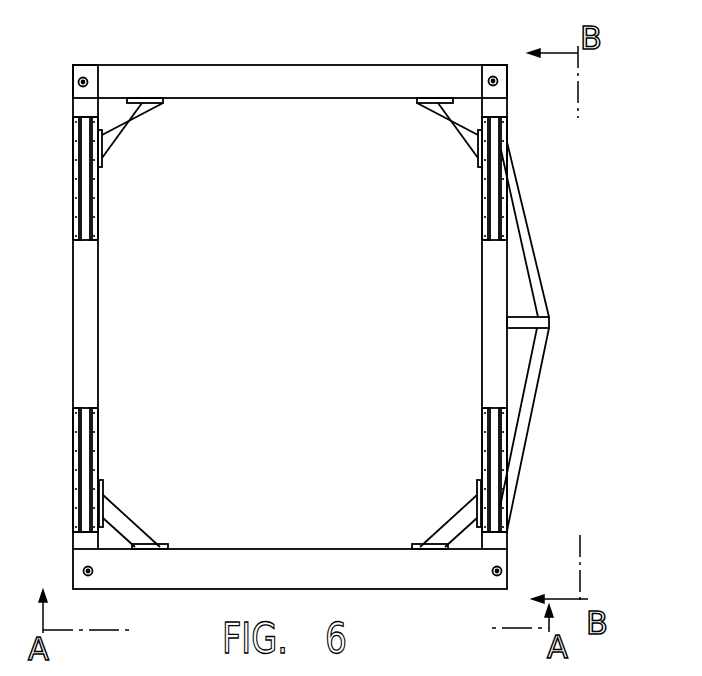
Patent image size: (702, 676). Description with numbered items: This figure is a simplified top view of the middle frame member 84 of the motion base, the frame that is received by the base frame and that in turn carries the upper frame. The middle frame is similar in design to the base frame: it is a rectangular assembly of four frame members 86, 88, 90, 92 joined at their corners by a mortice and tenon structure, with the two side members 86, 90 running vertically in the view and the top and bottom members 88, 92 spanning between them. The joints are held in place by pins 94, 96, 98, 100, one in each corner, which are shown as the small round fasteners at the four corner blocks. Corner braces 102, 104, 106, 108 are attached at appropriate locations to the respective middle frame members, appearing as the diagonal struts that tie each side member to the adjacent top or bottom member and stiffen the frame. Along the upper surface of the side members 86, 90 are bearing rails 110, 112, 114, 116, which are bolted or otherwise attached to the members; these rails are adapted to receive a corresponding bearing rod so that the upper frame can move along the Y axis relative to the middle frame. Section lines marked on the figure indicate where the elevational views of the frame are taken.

The middle frame member 84 is at (596, 155).
The middle frame member 86 is at (81, 297).
The middle frame member 88 is at (278, 72).
The middle frame member 90 is at (485, 299).
The middle frame member 92 is at (275, 556).
The pin 94 is at (83, 77).
The pin 96 is at (493, 76).
The pin 98 is at (497, 577).
The pin 100 is at (88, 577).
The corner brace 102 is at (122, 127).
The corner brace 104 is at (453, 123).
The corner brace 106 is at (458, 518).
The corner brace 108 is at (127, 522).
The bearing rail 110 is at (74, 190).
The bearing rail 112 is at (509, 186).
The bearing rail 114 is at (487, 440).
The bearing rail 116 is at (100, 443).